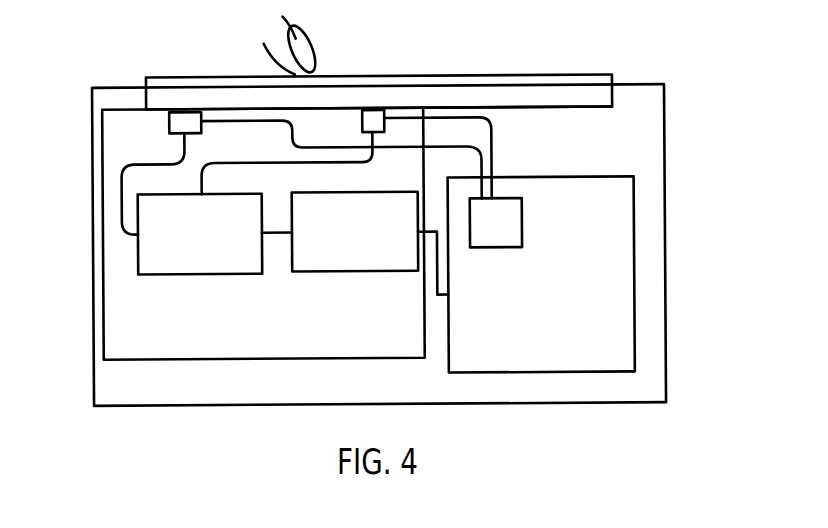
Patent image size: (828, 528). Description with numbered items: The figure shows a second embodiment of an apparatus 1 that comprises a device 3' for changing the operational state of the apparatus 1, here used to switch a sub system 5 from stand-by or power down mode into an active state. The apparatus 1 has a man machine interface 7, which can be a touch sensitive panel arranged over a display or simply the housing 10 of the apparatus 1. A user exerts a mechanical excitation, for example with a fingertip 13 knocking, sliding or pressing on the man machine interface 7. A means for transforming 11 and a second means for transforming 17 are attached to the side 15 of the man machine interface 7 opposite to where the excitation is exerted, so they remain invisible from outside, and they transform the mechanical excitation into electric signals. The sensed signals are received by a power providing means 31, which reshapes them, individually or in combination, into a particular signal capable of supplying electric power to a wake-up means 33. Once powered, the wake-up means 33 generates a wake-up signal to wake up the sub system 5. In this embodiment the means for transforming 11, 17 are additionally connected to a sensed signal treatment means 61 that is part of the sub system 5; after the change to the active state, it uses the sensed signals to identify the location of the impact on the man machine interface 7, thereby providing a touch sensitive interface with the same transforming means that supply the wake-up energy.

The apparatus 1 is at (62, 302).
The device 3' is at (263, 279).
The sub system 5 is at (549, 284).
The man machine interface 7 is at (189, 77).
The housing 10 is at (93, 220).
The means for transforming 11 is at (170, 124).
The fingertip 13 is at (311, 41).
The side of the man machine interface 15 is at (575, 107).
The second means for transforming 17 is at (363, 121).
The power providing means 31 is at (216, 243).
The wake-up means 33 is at (369, 242).
The sensed signal treatment means 61 is at (510, 237).